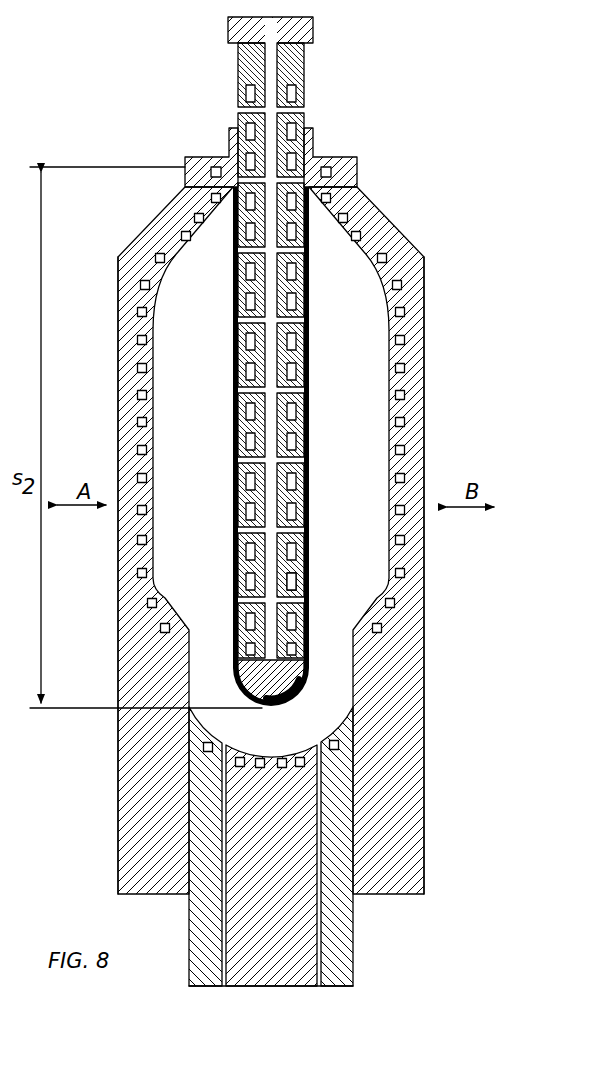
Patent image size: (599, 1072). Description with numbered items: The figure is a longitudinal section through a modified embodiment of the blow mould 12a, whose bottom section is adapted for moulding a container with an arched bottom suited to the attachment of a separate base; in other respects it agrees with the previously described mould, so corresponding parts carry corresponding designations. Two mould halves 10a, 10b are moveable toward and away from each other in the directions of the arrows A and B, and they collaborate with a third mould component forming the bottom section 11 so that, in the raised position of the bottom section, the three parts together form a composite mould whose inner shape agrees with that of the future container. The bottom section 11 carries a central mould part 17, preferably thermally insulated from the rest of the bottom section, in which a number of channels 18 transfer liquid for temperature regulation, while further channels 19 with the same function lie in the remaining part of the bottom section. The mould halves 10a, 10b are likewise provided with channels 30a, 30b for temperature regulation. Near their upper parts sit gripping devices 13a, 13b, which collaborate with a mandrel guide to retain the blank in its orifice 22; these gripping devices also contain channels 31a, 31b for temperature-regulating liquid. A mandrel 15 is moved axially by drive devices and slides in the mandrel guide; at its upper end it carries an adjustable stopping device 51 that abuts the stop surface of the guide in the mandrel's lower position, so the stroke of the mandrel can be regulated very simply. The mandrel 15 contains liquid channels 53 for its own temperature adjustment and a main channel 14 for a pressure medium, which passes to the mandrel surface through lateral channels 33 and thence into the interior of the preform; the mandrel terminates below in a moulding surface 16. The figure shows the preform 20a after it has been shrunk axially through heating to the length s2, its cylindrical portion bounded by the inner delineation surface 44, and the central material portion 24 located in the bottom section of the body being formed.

The mould half 10a is at (127, 437).
The mould half 10b is at (415, 436).
The bottom section 11 is at (337, 865).
The blow mould 12a is at (439, 374).
The gripping device 13a is at (183, 182).
The gripping device 13b is at (358, 184).
The main channel 14 is at (272, 85).
The mandrel 15 is at (309, 362).
The moulding surface 16 is at (296, 680).
The central mould part 17 is at (292, 812).
The channels 18 is at (299, 757).
The channels 19 is at (208, 742).
The preform 20a is at (307, 403).
The orifice 22 is at (305, 170).
The central material portion 24 is at (285, 703).
The channels 30a is at (141, 285).
The channels 30b is at (400, 286).
The channels 31a is at (213, 168).
The channels 31b is at (332, 172).
The lateral channels 33 is at (234, 393).
The inner delineation surface 44 is at (294, 570).
The adjustable stopping device 51 is at (303, 36).
The liquid channels 53 is at (234, 503).